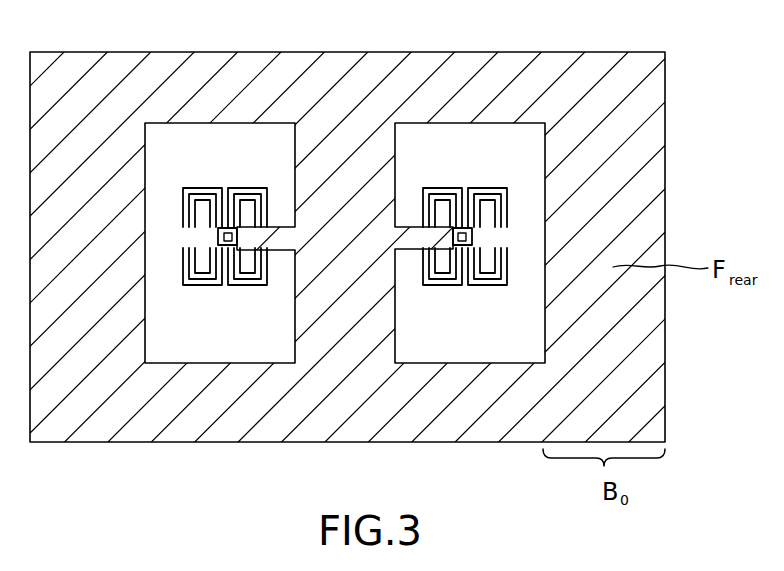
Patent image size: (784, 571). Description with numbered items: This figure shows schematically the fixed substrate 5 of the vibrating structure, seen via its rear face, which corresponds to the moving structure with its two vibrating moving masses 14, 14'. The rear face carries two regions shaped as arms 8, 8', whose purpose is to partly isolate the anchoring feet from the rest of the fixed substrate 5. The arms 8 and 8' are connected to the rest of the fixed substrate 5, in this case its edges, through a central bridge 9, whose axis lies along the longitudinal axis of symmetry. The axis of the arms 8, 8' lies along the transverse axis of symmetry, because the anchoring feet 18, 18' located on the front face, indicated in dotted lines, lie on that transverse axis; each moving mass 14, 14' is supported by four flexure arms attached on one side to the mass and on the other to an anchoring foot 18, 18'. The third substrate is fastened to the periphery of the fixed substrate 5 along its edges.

The fixed substrate 5 is at (666, 135).
The arm 8 is at (233, 150).
The arm 8' is at (457, 150).
The bridge 9 is at (347, 235).
The vibrating moving mass 14 is at (223, 299).
The vibrating moving mass 14' is at (470, 299).
The anchoring foot 18 is at (192, 275).
The anchoring foot 18' is at (493, 275).